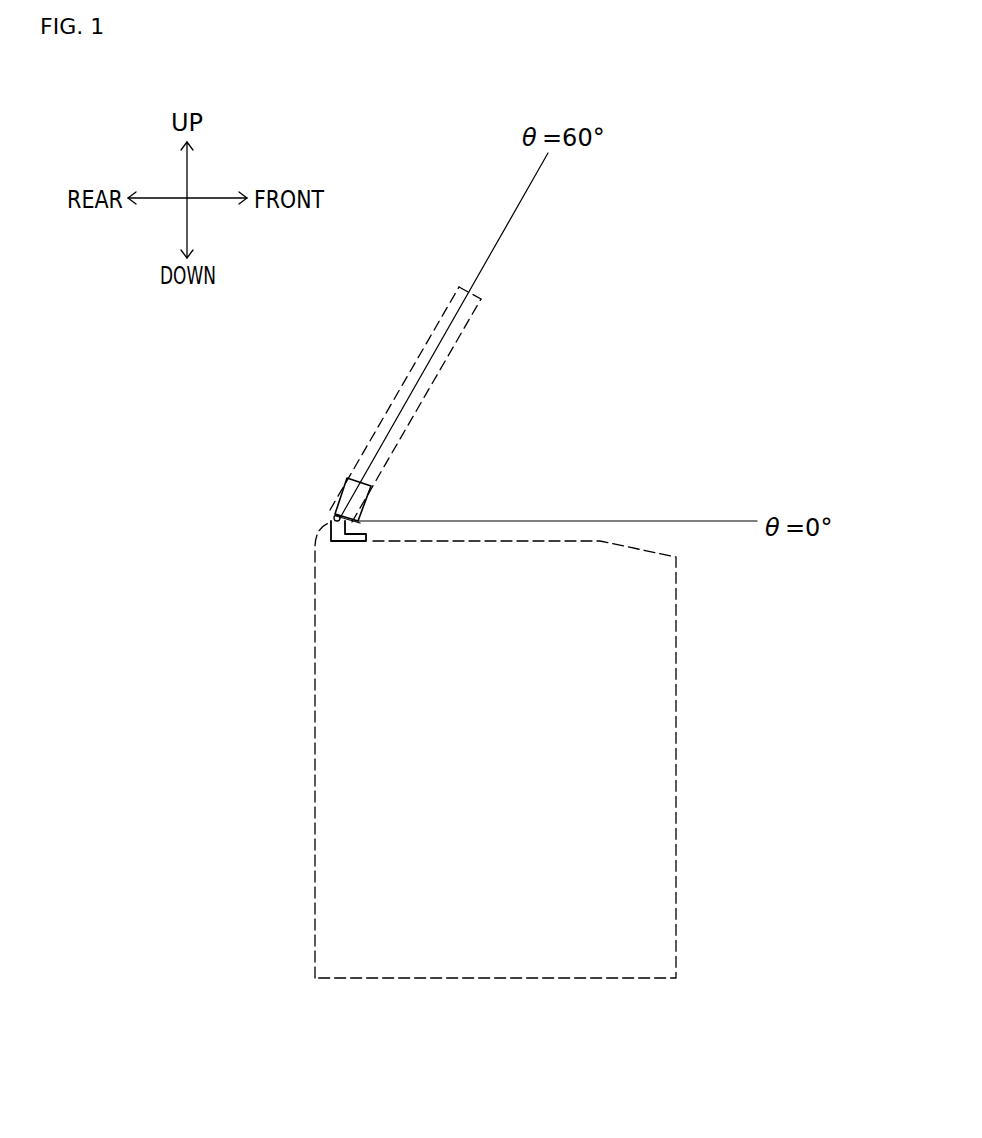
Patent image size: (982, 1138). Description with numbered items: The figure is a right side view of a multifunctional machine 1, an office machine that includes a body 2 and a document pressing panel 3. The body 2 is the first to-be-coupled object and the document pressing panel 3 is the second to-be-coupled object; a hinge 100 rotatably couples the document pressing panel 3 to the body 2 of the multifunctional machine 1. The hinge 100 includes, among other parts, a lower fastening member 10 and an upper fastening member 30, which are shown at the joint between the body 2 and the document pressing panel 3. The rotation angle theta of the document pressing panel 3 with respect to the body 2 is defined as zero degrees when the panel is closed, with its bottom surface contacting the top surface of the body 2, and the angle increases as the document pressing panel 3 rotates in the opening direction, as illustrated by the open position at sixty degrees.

The multifunctional machine 1 is at (660, 195).
The body 2 is at (529, 979).
The document pressing panel 3 is at (383, 370).
The lower fastening member 10 is at (314, 545).
The upper fastening member 30 is at (351, 491).
The hinge 100 is at (297, 505).